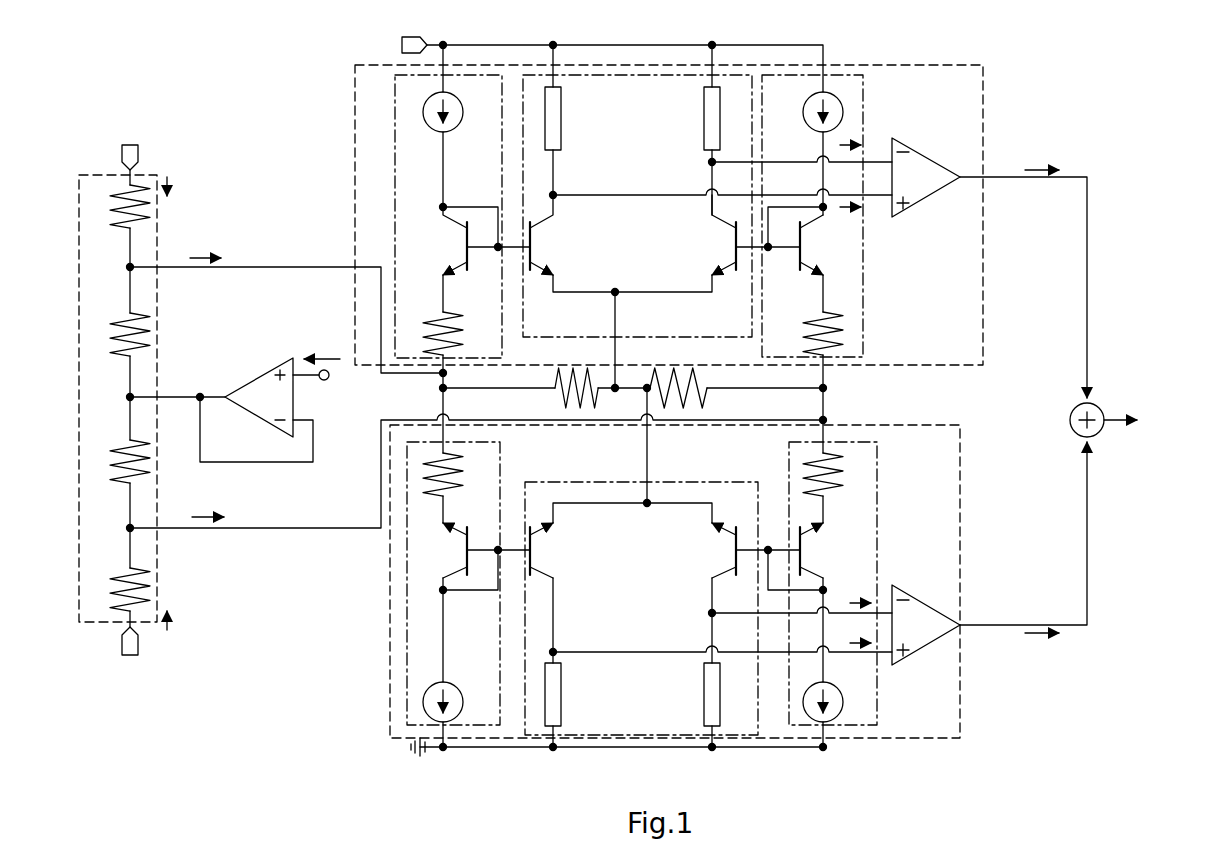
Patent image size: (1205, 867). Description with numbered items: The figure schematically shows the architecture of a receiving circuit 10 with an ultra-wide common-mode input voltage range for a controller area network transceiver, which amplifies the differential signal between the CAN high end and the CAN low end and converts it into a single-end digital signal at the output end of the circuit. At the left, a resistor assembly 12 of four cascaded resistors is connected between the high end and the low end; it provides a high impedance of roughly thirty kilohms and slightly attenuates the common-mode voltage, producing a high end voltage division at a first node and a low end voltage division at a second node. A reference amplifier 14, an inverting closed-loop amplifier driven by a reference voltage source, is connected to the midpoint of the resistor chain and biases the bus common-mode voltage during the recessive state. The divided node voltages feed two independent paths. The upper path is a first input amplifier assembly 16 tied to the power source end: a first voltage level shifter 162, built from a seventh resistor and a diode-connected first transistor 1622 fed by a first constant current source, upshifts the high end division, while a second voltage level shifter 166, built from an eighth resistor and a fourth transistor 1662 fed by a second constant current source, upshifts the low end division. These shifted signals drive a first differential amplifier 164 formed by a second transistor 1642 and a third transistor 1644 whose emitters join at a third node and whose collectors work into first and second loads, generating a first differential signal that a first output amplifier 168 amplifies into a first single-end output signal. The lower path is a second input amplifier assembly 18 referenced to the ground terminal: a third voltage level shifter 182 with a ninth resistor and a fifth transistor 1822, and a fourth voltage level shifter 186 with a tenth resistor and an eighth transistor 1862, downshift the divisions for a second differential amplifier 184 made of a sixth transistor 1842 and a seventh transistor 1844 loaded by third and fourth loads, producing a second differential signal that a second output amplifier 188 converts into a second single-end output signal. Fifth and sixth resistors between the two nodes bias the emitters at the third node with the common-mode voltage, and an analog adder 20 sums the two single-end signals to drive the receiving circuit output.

The receiving circuit 10 is at (248, 78).
The resistor assembly 12 is at (78, 220).
The reference amplifier 14 is at (266, 368).
The first input amplifier assembly 16 is at (354, 137).
The first voltage level shifter 162 is at (394, 237).
The first transistor 1622 is at (461, 222).
The first differential amplifier 164 is at (657, 75).
The second transistor 1642 is at (540, 246).
The third transistor 1644 is at (727, 246).
The second voltage level shifter 166 is at (867, 297).
The fourth transistor 1662 is at (800, 249).
The first output amplifier 168 is at (933, 158).
The second input amplifier assembly 18 is at (392, 598).
The third voltage level shifter 182 is at (392, 632).
The fifth transistor 1822 is at (465, 545).
The second differential amplifier 184 is at (635, 735).
The sixth transistor 1842 is at (535, 553).
The seventh transistor 1844 is at (735, 548).
The fourth voltage level shifter 186 is at (877, 497).
The eighth transistor 1862 is at (800, 552).
The second output amplifier 188 is at (918, 650).
The analog adder 20 is at (1068, 412).